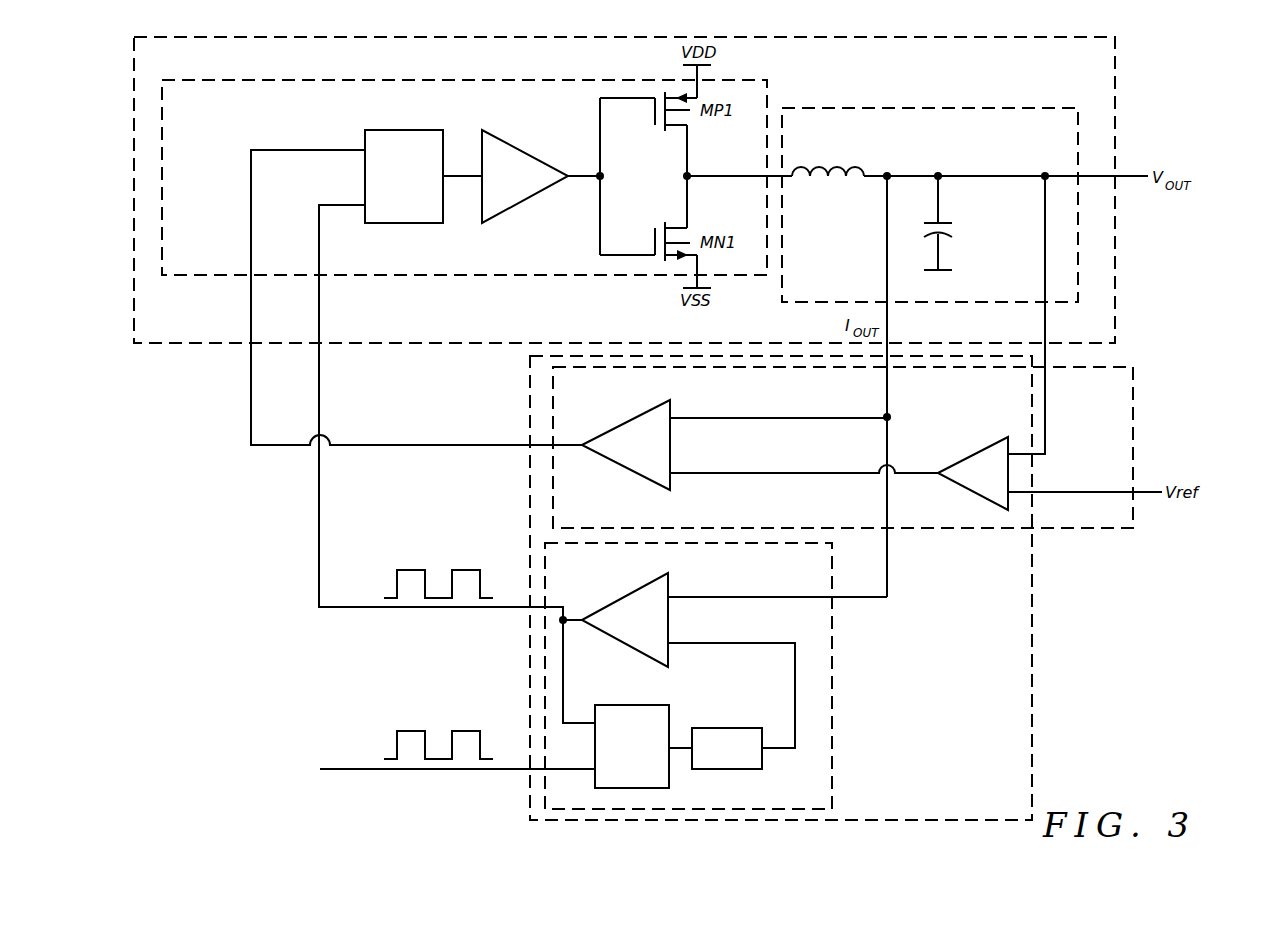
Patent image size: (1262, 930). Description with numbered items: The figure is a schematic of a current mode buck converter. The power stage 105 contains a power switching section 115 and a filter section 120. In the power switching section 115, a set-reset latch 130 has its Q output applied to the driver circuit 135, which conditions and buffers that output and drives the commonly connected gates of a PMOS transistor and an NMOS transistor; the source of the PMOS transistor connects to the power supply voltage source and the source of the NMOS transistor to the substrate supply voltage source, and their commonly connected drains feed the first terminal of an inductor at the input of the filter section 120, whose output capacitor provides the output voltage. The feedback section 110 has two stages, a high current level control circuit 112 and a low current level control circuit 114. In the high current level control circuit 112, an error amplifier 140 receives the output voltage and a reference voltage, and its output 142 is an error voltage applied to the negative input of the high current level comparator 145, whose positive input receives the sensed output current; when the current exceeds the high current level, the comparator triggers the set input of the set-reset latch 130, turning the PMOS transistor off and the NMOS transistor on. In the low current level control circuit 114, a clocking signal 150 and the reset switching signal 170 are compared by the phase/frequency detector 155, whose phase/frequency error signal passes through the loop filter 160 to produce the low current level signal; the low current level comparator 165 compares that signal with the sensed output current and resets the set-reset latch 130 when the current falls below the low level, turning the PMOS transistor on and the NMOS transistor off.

The power stage 105 is at (1117, 62).
The feedback section 110 is at (1033, 583).
The high current level control circuit 112 is at (1135, 380).
The low current level control circuit 114 is at (834, 633).
The power switching section 115 is at (769, 80).
The filter section 120 is at (1045, 108).
The set-reset latch 130 is at (385, 130).
The driver circuit 135 is at (525, 153).
The error amplifier 140 is at (963, 459).
The output of the error amplifier 142 is at (912, 475).
The high current level comparator 145 is at (625, 422).
The clocking signal 150 is at (397, 760).
The phase/frequency detector 155 is at (632, 705).
The loop filter 160 is at (738, 728).
The low current level comparator 165 is at (625, 595).
The reset switching signal 170 is at (397, 598).